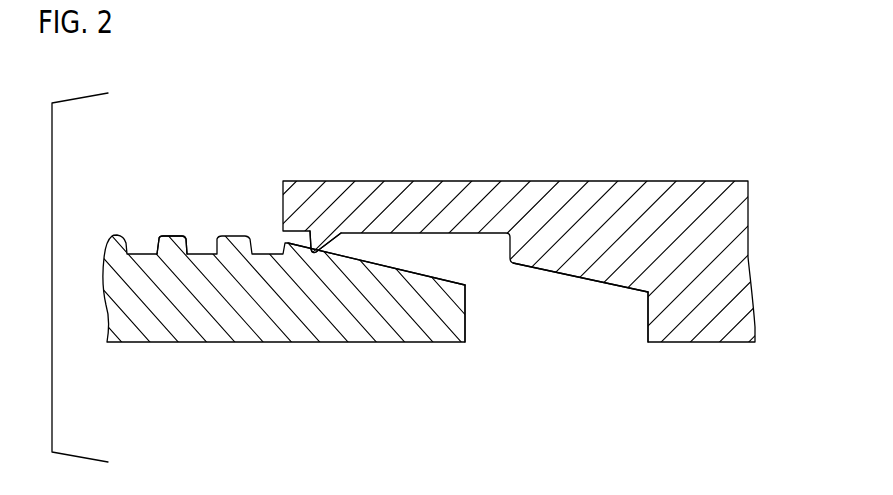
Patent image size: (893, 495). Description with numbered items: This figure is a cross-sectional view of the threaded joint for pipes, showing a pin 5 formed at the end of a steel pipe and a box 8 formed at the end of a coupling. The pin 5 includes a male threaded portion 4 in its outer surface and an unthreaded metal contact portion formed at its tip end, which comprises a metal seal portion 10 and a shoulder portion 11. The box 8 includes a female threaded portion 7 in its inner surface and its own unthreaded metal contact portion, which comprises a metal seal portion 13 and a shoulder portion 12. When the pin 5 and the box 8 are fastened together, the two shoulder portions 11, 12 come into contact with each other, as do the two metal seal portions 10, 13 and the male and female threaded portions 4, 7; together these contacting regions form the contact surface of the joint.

The male threaded portion 4 is at (173, 235).
The pin 5 is at (267, 357).
The female threaded portion 7 is at (313, 245).
The box 8 is at (611, 179).
The metal seal portion 10 is at (383, 268).
The shoulder portion 11 is at (466, 306).
The shoulder portion 12 is at (647, 305).
The metal seal portion 13 is at (570, 275).